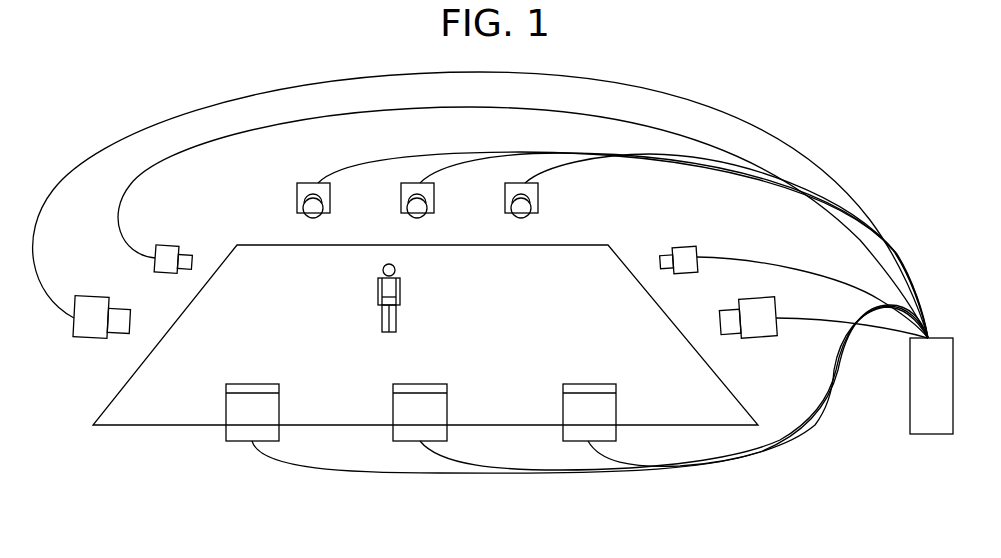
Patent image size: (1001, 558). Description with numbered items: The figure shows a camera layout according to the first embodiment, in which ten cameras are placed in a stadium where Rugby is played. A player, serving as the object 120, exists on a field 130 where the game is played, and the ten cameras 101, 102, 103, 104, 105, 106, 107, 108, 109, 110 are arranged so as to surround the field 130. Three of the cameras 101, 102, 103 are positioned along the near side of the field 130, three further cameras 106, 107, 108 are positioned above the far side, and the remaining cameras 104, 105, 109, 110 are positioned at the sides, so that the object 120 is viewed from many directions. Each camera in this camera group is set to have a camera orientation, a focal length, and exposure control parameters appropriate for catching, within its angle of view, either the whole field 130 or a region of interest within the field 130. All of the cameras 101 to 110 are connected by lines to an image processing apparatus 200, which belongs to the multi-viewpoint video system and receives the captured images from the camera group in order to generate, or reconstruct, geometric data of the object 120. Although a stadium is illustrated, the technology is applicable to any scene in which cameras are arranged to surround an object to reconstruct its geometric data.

The camera 101 is at (253, 384).
The camera 102 is at (421, 384).
The camera 103 is at (588, 384).
The camera 104 is at (762, 338).
The camera 105 is at (683, 245).
The camera 106 is at (524, 216).
The camera 107 is at (420, 216).
The camera 108 is at (316, 216).
The camera 109 is at (165, 246).
The camera 110 is at (90, 297).
The object 120 is at (400, 290).
The field 130 is at (160, 366).
The image processing apparatus 200 is at (930, 434).